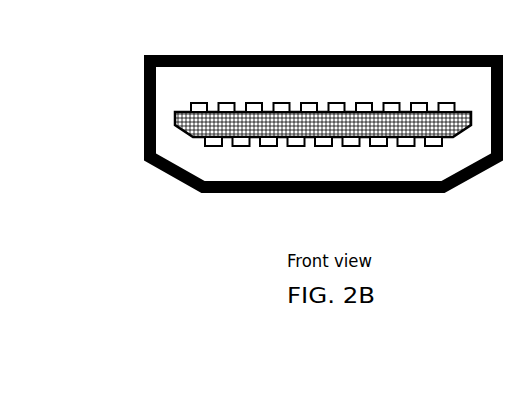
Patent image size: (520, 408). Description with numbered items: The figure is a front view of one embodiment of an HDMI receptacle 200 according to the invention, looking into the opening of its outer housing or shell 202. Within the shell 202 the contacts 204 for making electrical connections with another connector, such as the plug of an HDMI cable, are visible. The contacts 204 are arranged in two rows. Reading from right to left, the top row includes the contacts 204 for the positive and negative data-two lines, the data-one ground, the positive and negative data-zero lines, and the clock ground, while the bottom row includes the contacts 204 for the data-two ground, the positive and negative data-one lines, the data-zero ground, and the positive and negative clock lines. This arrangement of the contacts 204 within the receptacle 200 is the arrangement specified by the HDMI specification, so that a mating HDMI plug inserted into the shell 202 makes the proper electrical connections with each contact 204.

The connector insulator body 200 is at (323, 124).
The connector shell 202 is at (143, 59).
The contacts 204 is at (181, 104).